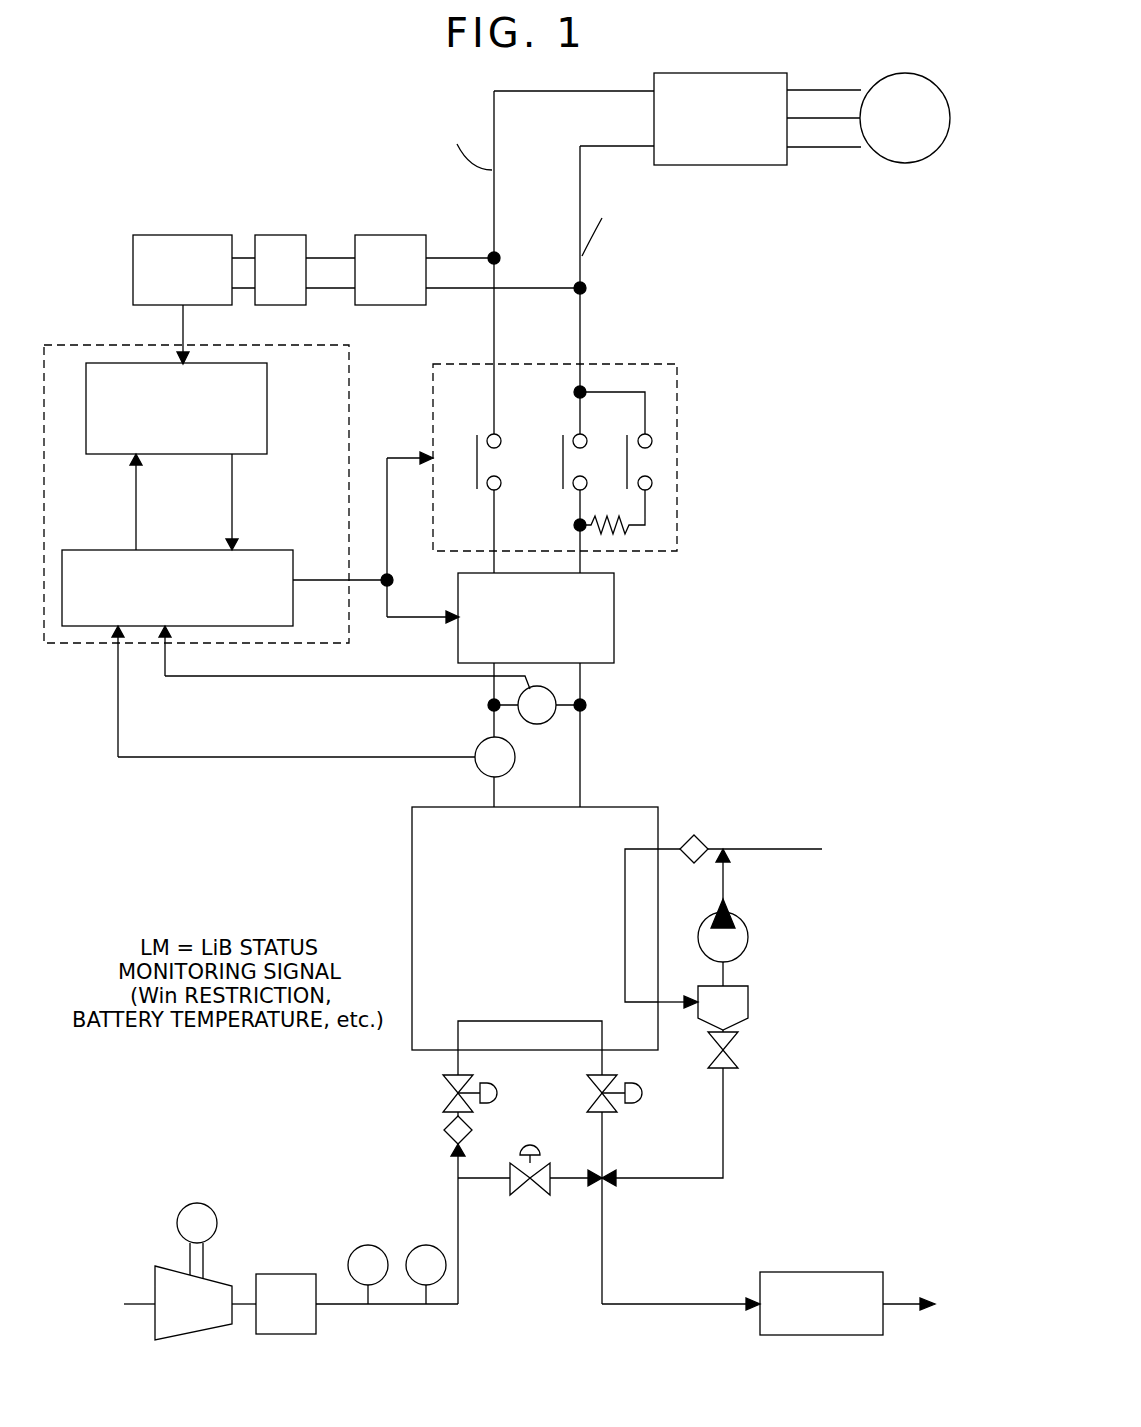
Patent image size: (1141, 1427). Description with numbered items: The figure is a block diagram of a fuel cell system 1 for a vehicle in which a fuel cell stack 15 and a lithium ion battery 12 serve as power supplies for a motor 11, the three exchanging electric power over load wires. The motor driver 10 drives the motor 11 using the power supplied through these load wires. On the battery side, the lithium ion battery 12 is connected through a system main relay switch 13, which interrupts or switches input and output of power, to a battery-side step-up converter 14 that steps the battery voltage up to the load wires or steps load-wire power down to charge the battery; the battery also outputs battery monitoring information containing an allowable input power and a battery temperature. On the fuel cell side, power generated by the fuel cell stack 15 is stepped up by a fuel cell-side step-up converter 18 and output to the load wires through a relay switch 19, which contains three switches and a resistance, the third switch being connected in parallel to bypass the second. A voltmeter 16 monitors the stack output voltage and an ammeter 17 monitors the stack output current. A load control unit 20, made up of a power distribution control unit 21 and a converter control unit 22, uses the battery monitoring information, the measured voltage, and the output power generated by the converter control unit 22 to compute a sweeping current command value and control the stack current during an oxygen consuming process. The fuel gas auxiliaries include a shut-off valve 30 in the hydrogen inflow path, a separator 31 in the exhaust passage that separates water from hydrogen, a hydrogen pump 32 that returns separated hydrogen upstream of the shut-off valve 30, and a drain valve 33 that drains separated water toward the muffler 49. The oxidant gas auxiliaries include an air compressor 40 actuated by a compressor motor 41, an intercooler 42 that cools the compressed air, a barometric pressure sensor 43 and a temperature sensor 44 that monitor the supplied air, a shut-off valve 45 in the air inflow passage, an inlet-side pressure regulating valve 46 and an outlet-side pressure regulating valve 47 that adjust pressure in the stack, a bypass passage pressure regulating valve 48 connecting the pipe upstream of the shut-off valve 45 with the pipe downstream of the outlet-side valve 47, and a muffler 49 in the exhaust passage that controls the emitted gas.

The fuel cell system 1 is at (275, 138).
The motor driver 10 is at (722, 72).
The motor 11 is at (905, 73).
The lithium ion battery 12 is at (180, 235).
The system main relay switch 13 is at (280, 235).
The battery-side step-up converter 14 is at (400, 235).
The fuel cell stack 15 is at (615, 807).
The voltmeter 16 is at (536, 724).
The ammeter 17 is at (483, 742).
The fuel cell-side step-up converter 18 is at (614, 628).
The relay switch 19 is at (630, 364).
The load control unit 20 is at (352, 393).
The power distribution control unit 21 is at (267, 412).
The converter control unit 22 is at (152, 550).
The shut-off valve 30 is at (700, 835).
The separator 31 is at (748, 1002).
The hydrogen pump 32 is at (748, 915).
The drain valve 33 is at (738, 1058).
The air compressor 40 is at (183, 1336).
The compressor motor 41 is at (208, 1203).
The intercooler 42 is at (290, 1274).
The barometric pressure sensor 43 is at (355, 1248).
The temperature sensor 44 is at (425, 1245).
The shut-off valve 45 is at (445, 1130).
The inlet-side pressure regulating valve 46 is at (503, 1100).
The outlet-side pressure regulating valve 47 is at (645, 1100).
The bypass passage pressure regulating valve 48 is at (530, 1196).
The muffler 49 is at (812, 1272).